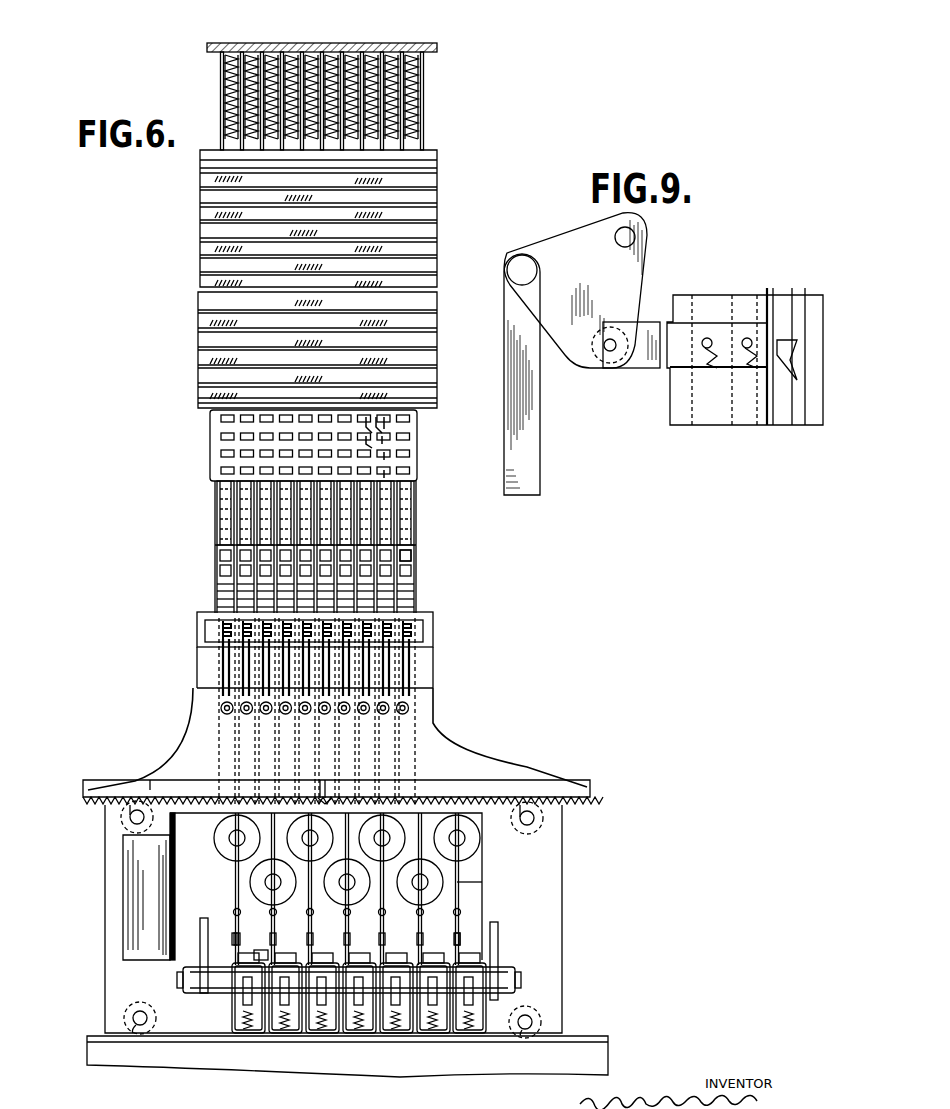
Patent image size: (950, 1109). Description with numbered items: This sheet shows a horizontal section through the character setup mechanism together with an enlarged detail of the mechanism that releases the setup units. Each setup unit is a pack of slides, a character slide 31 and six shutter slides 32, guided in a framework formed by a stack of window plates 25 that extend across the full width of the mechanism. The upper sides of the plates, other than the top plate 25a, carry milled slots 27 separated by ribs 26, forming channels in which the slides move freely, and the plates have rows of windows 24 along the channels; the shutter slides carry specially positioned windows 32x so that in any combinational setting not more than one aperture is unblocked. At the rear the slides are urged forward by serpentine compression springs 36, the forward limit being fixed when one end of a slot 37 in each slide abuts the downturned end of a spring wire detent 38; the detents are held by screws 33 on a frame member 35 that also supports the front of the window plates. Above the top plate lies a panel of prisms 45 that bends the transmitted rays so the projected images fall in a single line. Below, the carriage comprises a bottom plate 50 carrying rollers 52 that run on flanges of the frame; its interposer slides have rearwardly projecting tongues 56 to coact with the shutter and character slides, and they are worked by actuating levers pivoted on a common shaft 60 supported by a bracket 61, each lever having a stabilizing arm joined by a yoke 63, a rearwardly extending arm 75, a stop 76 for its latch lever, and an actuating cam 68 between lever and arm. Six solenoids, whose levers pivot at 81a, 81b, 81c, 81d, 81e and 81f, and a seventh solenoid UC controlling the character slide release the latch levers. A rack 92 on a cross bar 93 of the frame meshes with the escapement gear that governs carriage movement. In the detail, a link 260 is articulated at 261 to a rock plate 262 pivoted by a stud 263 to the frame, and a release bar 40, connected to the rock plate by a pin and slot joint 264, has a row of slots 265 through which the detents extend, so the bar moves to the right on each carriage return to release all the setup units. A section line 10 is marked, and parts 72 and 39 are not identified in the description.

In FIG. 6, the section line 10 is at (150, 47).
In FIG. 6, the serpentine compression spring 36 is at (405, 78).
In FIG. 6, the rib 26 is at (415, 98).
In FIG. 9, the rib 26 is at (710, 425).
In FIG. 6, the milled slot 27 is at (410, 112).
In FIG. 6, the character slide 31 is at (405, 145).
In FIG. 6, the window plate 25 is at (437, 165).
In FIG. 6, the panel of prisms 45 is at (459, 230).
In FIG. 6, the window 24 is at (221, 437).
In FIG. 6, the top window plate 25a is at (410, 440).
In FIG. 6, the shutter slide 32 is at (410, 553).
In FIG. 6, the shutter slide window 32x is at (410, 560).
In FIG. 6, the release bar 40 is at (205, 630).
In FIG. 9, the release bar 40 is at (643, 330).
In FIG. 6, the slot 37 is at (395, 648).
In FIG. 9, the slot 37 is at (768, 400).
In FIG. 6, the spring wire detent 38 is at (398, 680).
In FIG. 9, the spring wire detent 38 is at (705, 338).
In FIG. 6, the screw 33 is at (410, 710).
In FIG. 6, the frame member 35 is at (478, 752).
In FIG. 6, the cross bar 93 is at (545, 790).
In FIG. 6, the tongue 56 is at (330, 790).
In FIG. 6, the rack 92 is at (95, 800).
In FIG. 6, the roller 52 is at (122, 825).
In FIG. 6, the bottom plate 50 is at (115, 977).
In FIG. 6, the pivot 81a is at (214, 843).
In FIG. 6, the pivot 81b is at (283, 892).
In FIG. 6, the pivot 81c is at (285, 840).
In FIG. 6, the pivot 81d is at (357, 892).
In FIG. 6, the pivot 81e is at (359, 840).
In FIG. 6, the pivot 81f is at (430, 892).
In FIG. 6, the solenoid UC is at (472, 848).
In FIG. 6, the shaft 72 is at (465, 885).
In FIG. 6, the stop 76 is at (402, 925).
In FIG. 6, the bracket 61 is at (197, 919).
In FIG. 6, the rearwardly extending arm 75 is at (232, 936).
In FIG. 6, the actuating cam 68 is at (258, 953).
In FIG. 6, the shaft 60 is at (183, 980).
In FIG. 6, the yoke 63 is at (250, 1036).
In FIG. 9, the link 260 is at (525, 455).
In FIG. 9, the articulation 261 is at (520, 258).
In FIG. 9, the rock plate 262 is at (557, 238).
In FIG. 9, the stud 263 is at (630, 237).
In FIG. 9, the pin and slot joint 264 is at (608, 352).
In FIG. 9, the slot 265 is at (748, 350).
In FIG. 9, the pawl 39 is at (785, 345).